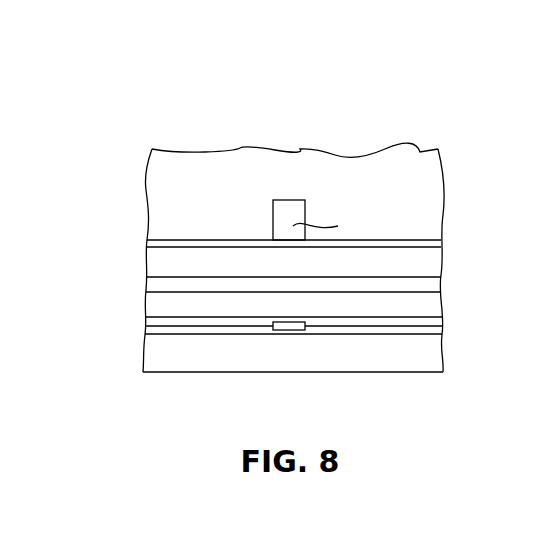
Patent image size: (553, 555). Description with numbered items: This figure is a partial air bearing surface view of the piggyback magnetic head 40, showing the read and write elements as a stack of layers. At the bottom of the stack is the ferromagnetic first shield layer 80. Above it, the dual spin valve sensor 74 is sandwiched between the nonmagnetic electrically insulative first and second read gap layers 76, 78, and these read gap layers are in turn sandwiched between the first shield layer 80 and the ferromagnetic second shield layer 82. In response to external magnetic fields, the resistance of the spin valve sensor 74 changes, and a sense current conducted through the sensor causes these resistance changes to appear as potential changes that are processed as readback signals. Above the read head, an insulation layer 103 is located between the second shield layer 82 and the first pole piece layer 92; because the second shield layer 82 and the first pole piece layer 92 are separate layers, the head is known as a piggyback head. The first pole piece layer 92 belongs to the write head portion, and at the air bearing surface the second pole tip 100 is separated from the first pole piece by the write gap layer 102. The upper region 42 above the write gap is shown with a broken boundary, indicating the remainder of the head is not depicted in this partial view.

The piggyback magnetic head 40 is at (304, 267).
The top layer 42 is at (255, 170).
The second pole tip 100 is at (289, 207).
The write gap layer 102 is at (214, 240).
The first pole piece layer 92 is at (155, 262).
The insulation layer 103 is at (432, 285).
The second shield layer 82 is at (152, 306).
The second read gap layer 78 is at (404, 322).
The dual spin valve sensor 74 is at (291, 331).
The first read gap layer 76 is at (204, 334).
The first shield layer 80 is at (432, 357).